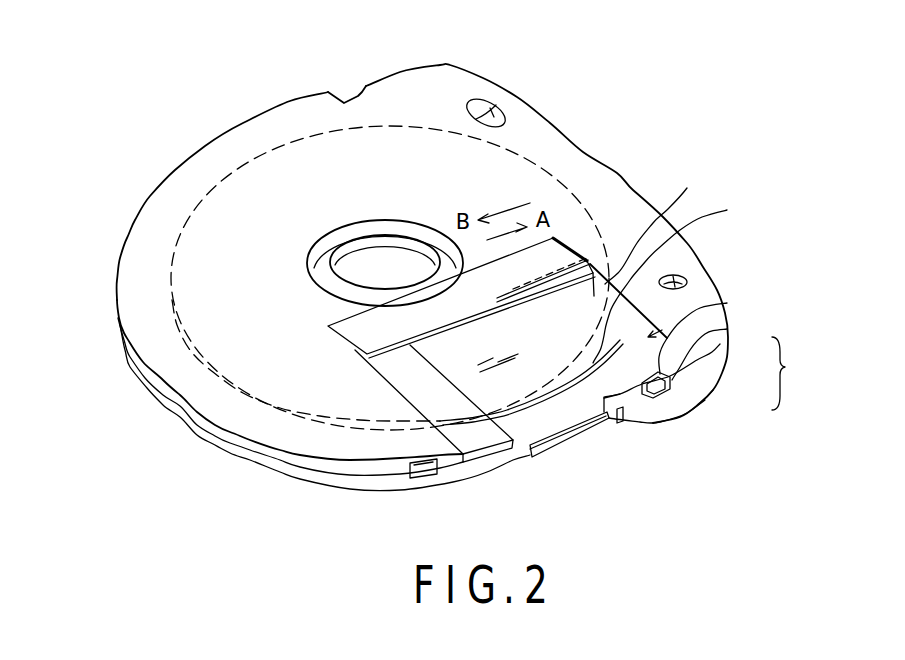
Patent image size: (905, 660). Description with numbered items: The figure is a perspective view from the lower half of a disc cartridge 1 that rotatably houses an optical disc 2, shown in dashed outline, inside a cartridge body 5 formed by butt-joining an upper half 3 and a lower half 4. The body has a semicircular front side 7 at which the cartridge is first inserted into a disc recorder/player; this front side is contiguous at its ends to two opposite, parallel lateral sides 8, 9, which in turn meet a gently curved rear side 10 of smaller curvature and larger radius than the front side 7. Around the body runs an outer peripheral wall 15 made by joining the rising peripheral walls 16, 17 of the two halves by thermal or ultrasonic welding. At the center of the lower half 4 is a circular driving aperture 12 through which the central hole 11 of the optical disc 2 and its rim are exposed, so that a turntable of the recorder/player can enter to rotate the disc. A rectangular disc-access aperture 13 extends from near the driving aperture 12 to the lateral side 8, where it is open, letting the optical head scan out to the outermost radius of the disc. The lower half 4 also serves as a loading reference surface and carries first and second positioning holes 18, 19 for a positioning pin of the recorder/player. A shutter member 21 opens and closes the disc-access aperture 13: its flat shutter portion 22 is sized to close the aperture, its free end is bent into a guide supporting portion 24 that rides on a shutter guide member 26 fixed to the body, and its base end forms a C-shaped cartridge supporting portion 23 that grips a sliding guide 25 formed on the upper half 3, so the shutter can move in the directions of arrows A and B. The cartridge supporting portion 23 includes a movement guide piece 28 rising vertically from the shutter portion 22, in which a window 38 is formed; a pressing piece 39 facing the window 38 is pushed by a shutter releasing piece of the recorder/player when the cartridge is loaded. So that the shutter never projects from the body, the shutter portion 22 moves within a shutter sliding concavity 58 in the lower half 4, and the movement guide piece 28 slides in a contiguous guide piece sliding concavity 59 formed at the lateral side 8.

The disc cartridge 1 is at (280, 103).
The optical disc 2 is at (257, 177).
The upper half 3 is at (719, 374).
The lower half 4 is at (720, 344).
The cartridge body 5 is at (789, 381).
The circular front side 7 is at (117, 268).
The lateral side 8 is at (690, 389).
The lateral side 9 is at (392, 78).
The rear side 10 is at (613, 166).
The central hole 11 is at (387, 243).
The driving aperture 12 is at (333, 235).
The disc-access aperture 13 is at (500, 417).
The outer peripheral wall 15 is at (324, 426).
The rising peripheral wall 16 is at (233, 440).
The rising peripheral wall 17 is at (165, 488).
The first positioning hole 18 is at (676, 278).
The second positioning hole 19 is at (492, 111).
The shutter member 21 is at (727, 303).
The shutter portion 22 is at (727, 211).
The cartridge supporting portion 23 is at (637, 410).
The guide supporting portion 24 is at (588, 258).
The sliding guide 25 is at (587, 430).
The shutter guide member 26 is at (355, 339).
The movement guide piece 28 is at (621, 424).
The window 38 is at (648, 393).
The pressing piece 39 is at (727, 329).
The shutter sliding concavity 58 is at (687, 189).
The guide piece sliding concavity 59 is at (668, 395).